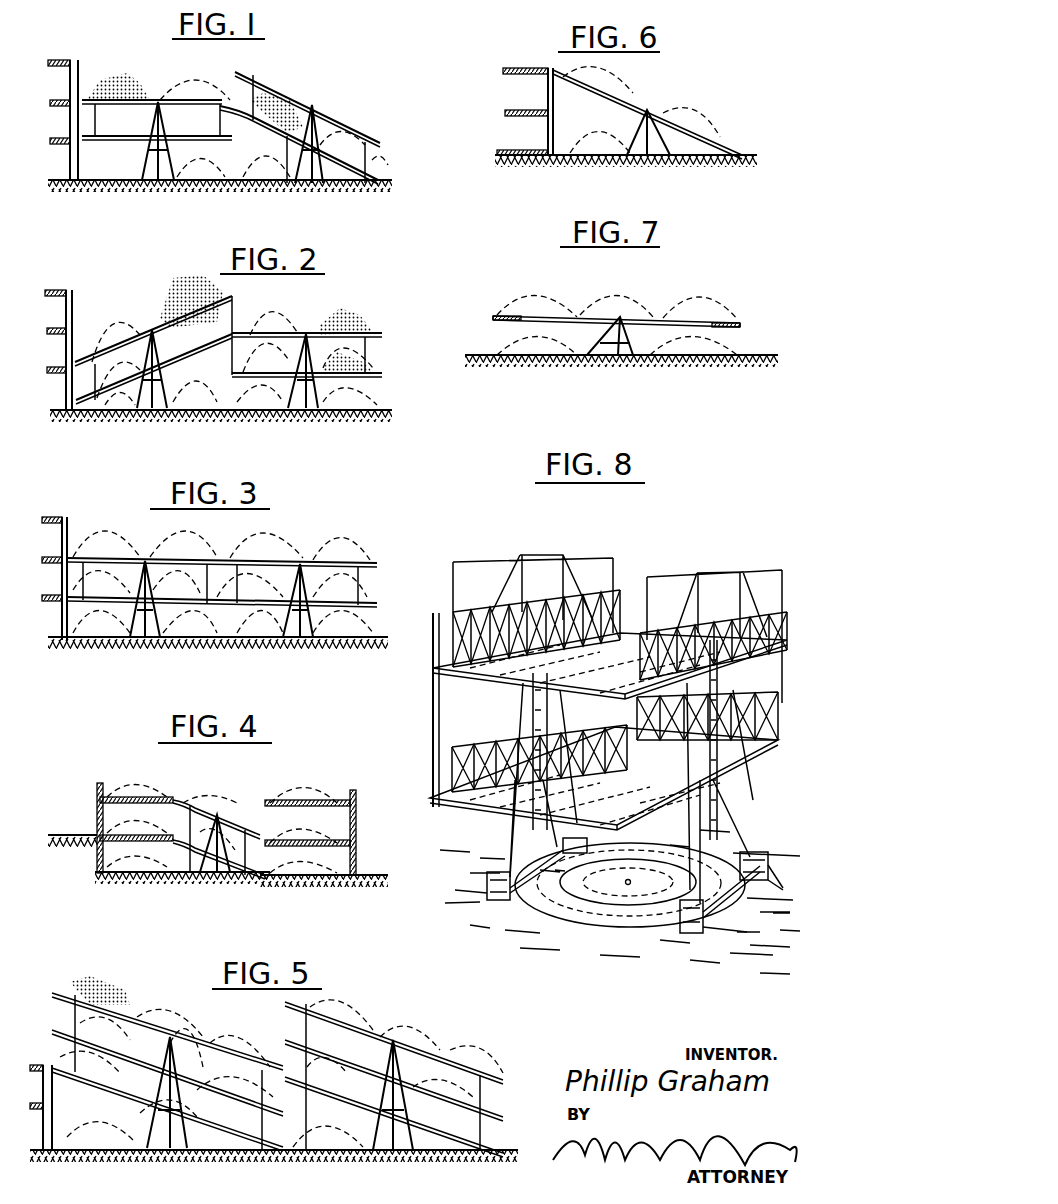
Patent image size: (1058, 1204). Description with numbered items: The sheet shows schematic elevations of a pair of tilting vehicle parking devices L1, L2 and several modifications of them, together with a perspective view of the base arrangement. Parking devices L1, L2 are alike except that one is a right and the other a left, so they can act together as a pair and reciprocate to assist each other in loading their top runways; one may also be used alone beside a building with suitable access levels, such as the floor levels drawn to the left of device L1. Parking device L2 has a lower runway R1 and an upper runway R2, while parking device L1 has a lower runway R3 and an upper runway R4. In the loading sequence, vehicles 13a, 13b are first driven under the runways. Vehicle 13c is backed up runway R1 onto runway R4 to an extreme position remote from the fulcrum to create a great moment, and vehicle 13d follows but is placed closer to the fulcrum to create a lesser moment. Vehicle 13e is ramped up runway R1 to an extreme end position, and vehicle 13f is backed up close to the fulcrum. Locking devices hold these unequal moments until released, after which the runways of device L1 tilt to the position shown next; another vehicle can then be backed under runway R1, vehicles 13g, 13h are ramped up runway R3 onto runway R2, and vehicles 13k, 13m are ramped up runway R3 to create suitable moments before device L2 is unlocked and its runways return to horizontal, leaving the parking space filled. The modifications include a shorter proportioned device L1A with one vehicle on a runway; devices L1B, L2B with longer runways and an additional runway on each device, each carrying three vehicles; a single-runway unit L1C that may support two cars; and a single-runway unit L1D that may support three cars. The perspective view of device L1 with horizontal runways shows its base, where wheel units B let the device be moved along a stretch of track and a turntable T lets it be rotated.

In FIG. 1, the parking device L1 is at (155, 95).
In FIG. 2, the parking device L1 is at (155, 322).
In FIG. 3, the parking device L1 is at (147, 553).
In FIG. 8, the parking device L1 is at (696, 550).
In FIG. 1, the parking device L2 is at (318, 100).
In FIG. 2, the parking device L2 is at (305, 327).
In FIG. 3, the parking device L2 is at (302, 556).
In FIG. 1, the lower runway R1 is at (259, 127).
In FIG. 2, the lower runway R1 is at (380, 380).
In FIG. 1, the upper runway R2 is at (343, 118).
In FIG. 2, the upper runway R2 is at (380, 334).
In FIG. 1, the lower runway R3 is at (136, 144).
In FIG. 2, the lower runway R3 is at (80, 398).
In FIG. 8, the lower runway R3 is at (478, 814).
In FIG. 1, the upper runway R4 is at (142, 108).
In FIG. 2, the upper runway R4 is at (80, 358).
In FIG. 8, the upper runway R4 is at (444, 690).
In FIG. 1, the vehicle 13a is at (262, 170).
In FIG. 1, the vehicle 13b is at (200, 168).
In FIG. 1, the vehicle 13c is at (106, 80).
In FIG. 2, the vehicle 13c is at (117, 332).
In FIG. 1, the vehicle 13d is at (200, 84).
In FIG. 2, the vehicle 13d is at (185, 290).
In FIG. 1, the vehicle 13e is at (283, 98).
In FIG. 2, the vehicle 13e is at (248, 362).
In FIG. 1, the vehicle 13f is at (370, 165).
In FIG. 2, the vehicle 13f is at (372, 368).
In FIG. 2, the vehicle 13g is at (370, 328).
In FIG. 2, the vehicle 13h is at (270, 320).
In FIG. 2, the vehicle 13k is at (232, 333).
In FIG. 2, the vehicle 13m is at (118, 396).
In FIG. 4, the parking device L1A is at (224, 808).
In FIG. 5, the parking device L1B is at (158, 1020).
In FIG. 5, the parking device L2B is at (418, 1038).
In FIG. 6, the parking device L1C is at (657, 106).
In FIG. 7, the parking device L1D is at (600, 308).
In FIG. 8, the wheel units B is at (766, 849).
In FIG. 8, the turntable T is at (577, 938).